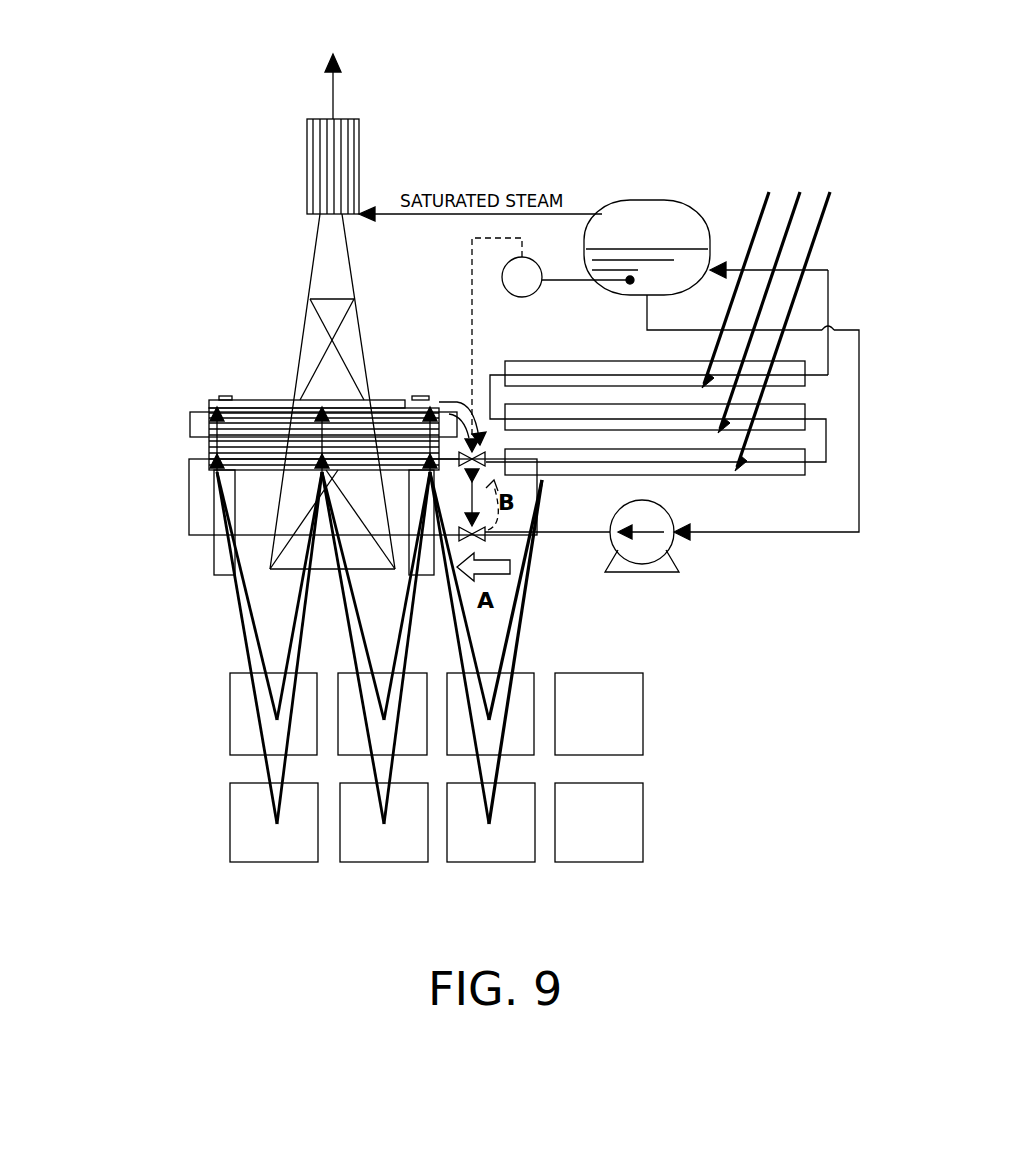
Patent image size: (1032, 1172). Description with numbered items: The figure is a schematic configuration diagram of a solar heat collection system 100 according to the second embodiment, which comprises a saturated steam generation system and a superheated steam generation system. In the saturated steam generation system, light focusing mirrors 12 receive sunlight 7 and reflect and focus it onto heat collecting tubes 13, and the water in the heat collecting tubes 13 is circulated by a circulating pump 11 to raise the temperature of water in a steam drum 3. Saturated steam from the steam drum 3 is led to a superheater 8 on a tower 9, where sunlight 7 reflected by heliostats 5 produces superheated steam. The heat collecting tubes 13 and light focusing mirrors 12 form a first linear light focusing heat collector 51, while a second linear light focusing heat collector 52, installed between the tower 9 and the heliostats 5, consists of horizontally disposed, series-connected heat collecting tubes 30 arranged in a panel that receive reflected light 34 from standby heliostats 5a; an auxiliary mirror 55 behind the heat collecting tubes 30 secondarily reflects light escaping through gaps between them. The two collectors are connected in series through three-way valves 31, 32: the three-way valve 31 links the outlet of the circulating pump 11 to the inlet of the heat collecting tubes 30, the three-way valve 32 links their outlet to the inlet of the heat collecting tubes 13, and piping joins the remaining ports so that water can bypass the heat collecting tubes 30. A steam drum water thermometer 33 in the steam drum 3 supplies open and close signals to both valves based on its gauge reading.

The solar heat collection system 100 is at (95, 142).
The steam drum 3 is at (698, 203).
The heliostats 5 is at (379, 776).
The heliostats held standby 5a is at (230, 724).
The sunlight 7 is at (838, 185).
The superheater 8 is at (305, 190).
The tower 9 is at (313, 330).
The circulating pump 11 is at (655, 572).
The light focusing mirrors 12 is at (796, 411).
The heat collecting tubes 13 is at (808, 458).
The heat collecting tubes 30 is at (288, 455).
The three-way valve 31 is at (486, 534).
The three-way valve 32 is at (442, 398).
The steam drum water thermometer 33 is at (536, 268).
The reflected light 34 is at (244, 640).
The first linear light focusing heat collector 51 is at (782, 492).
The second linear light focusing heat collector 52 is at (178, 452).
The auxiliary mirror 55 is at (378, 394).